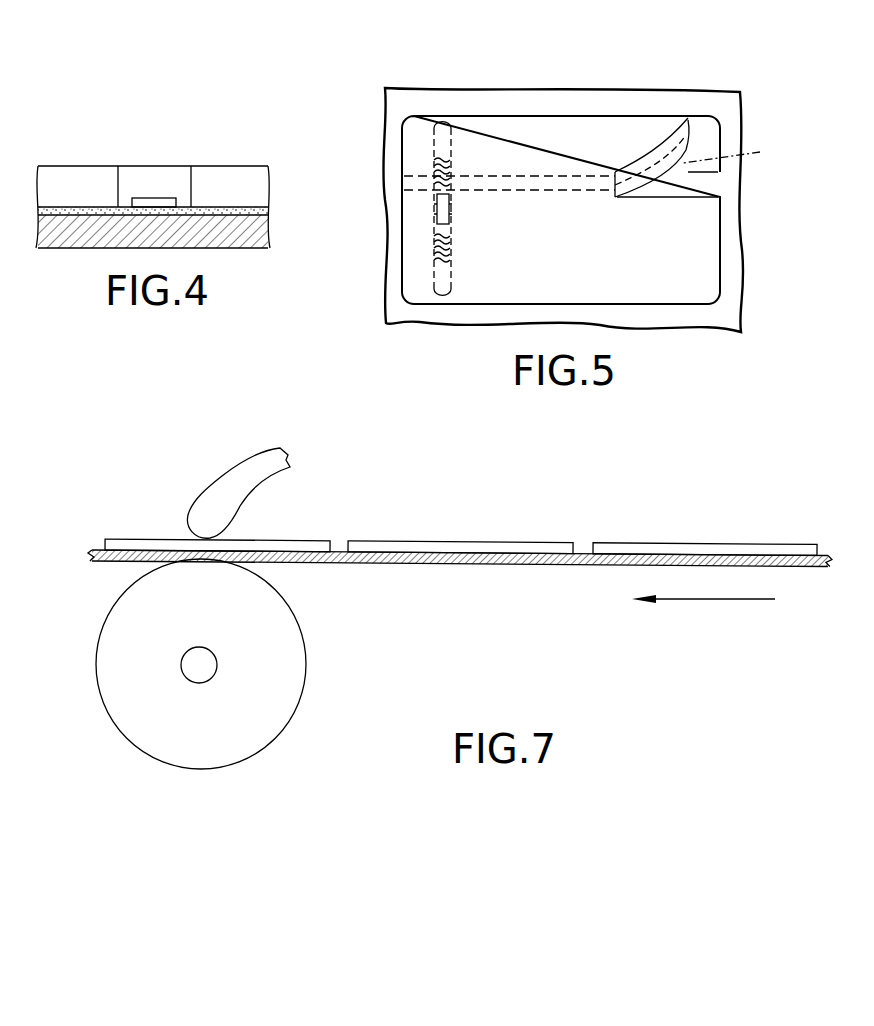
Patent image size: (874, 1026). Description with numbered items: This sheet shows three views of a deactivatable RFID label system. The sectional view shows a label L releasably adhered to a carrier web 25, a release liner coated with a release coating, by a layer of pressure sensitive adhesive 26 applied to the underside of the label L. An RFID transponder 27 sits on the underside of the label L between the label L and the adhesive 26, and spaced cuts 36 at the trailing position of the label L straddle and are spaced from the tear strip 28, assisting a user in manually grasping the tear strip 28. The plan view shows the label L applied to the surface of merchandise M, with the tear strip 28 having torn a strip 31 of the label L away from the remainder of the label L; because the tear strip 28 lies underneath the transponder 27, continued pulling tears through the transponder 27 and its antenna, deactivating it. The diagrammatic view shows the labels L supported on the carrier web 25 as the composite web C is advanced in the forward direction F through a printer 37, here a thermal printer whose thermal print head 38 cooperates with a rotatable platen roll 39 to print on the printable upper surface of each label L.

In FIG. 4, the carrier web 25 is at (66, 249).
In FIG. 7, the carrier web 25 is at (503, 563).
In FIG. 4, the pressure sensitive adhesive 26 is at (228, 216).
In FIG. 4, the RFID transponder 27 is at (156, 200).
In FIG. 5, the tear strip 28 is at (739, 153).
In FIG. 5, the strip 31 is at (688, 120).
In FIG. 4, the spaced cuts 36 is at (117, 185).
In FIG. 7, the printer 37 is at (200, 466).
In FIG. 7, the thermal print head 38 is at (208, 518).
In FIG. 7, the platen roll 39 is at (306, 663).
In FIG. 4, the label L is at (50, 166).
In FIG. 5, the label L is at (700, 235).
In FIG. 7, the label L is at (515, 540).
In FIG. 5, the merchandise M is at (728, 313).
In FIG. 7, the composite web C is at (636, 540).
In FIG. 7, the forward direction F is at (703, 601).